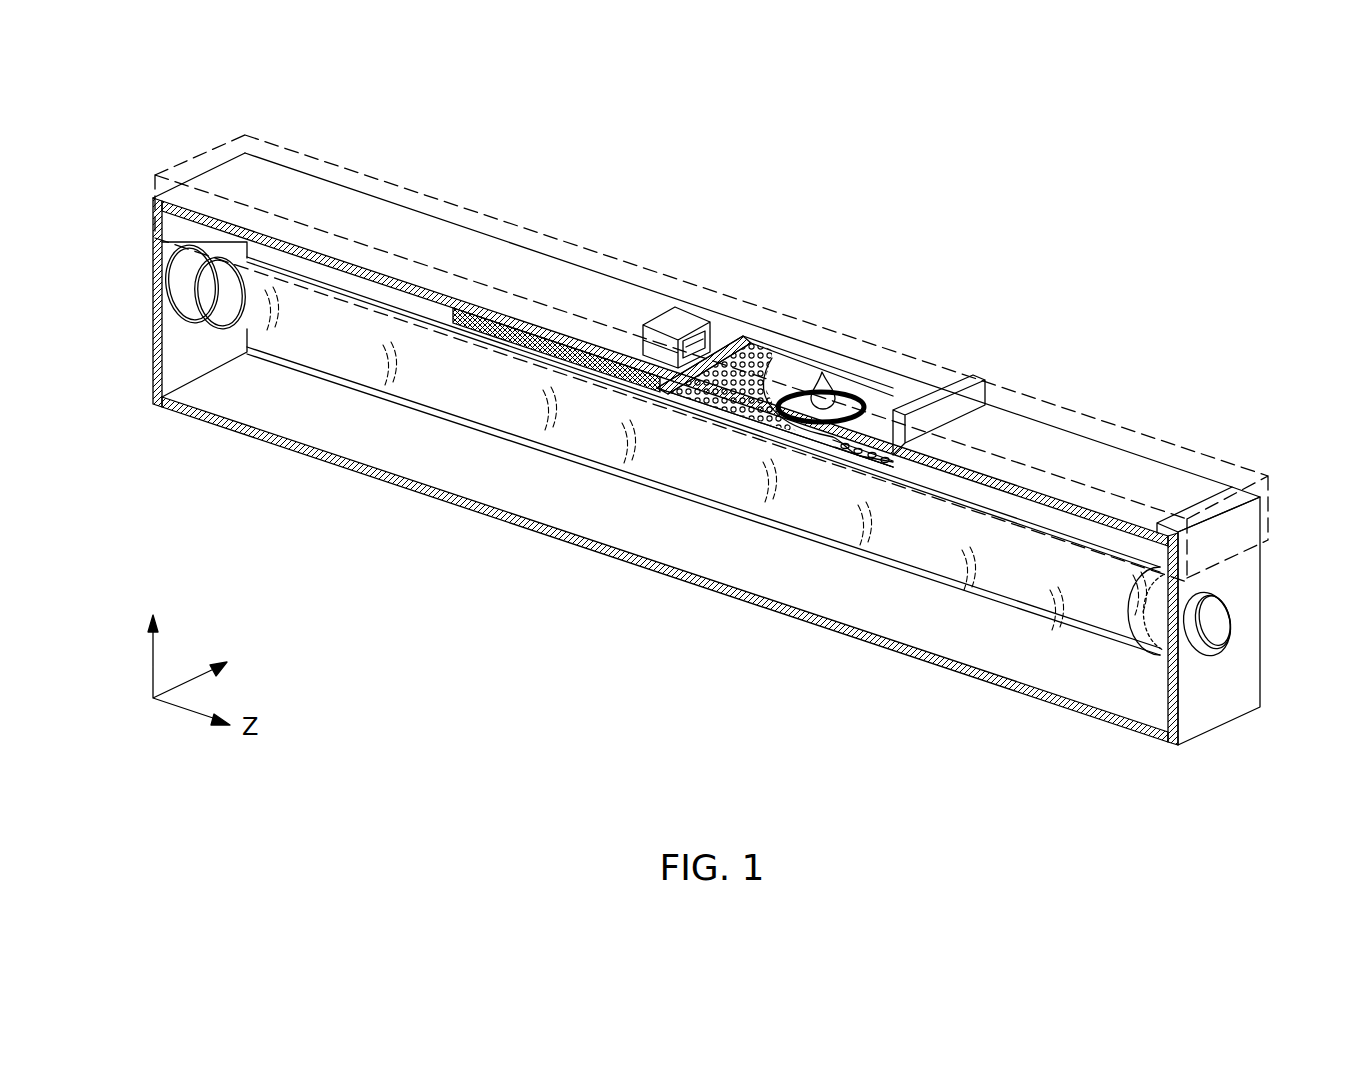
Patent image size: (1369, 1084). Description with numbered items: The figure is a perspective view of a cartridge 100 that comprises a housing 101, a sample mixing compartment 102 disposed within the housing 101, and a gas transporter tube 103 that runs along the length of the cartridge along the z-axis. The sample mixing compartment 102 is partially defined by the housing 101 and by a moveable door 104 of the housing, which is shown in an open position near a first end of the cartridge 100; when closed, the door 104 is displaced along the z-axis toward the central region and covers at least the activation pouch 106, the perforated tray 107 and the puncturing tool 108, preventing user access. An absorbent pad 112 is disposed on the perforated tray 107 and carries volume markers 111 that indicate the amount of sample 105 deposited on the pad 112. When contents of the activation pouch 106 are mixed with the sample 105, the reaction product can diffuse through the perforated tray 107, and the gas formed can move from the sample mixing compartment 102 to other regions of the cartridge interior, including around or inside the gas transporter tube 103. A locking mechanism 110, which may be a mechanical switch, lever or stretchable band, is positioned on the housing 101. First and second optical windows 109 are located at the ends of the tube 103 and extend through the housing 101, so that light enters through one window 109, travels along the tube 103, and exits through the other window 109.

The cartridge 100 is at (949, 219).
The housing 101 is at (328, 207).
The sample mixing compartment 102 is at (570, 237).
The gas transporter tube 103 is at (300, 345).
The moveable door 104 is at (1070, 450).
The sample 105 is at (850, 388).
The activation pouch 106 is at (485, 325).
The perforated tray 107 is at (748, 342).
The puncturing tool 108 is at (738, 365).
The optical window 109 is at (141, 273).
The locking mechanism 110 is at (673, 320).
The volume marker 111 is at (823, 370).
The absorbent pad 112 is at (885, 408).